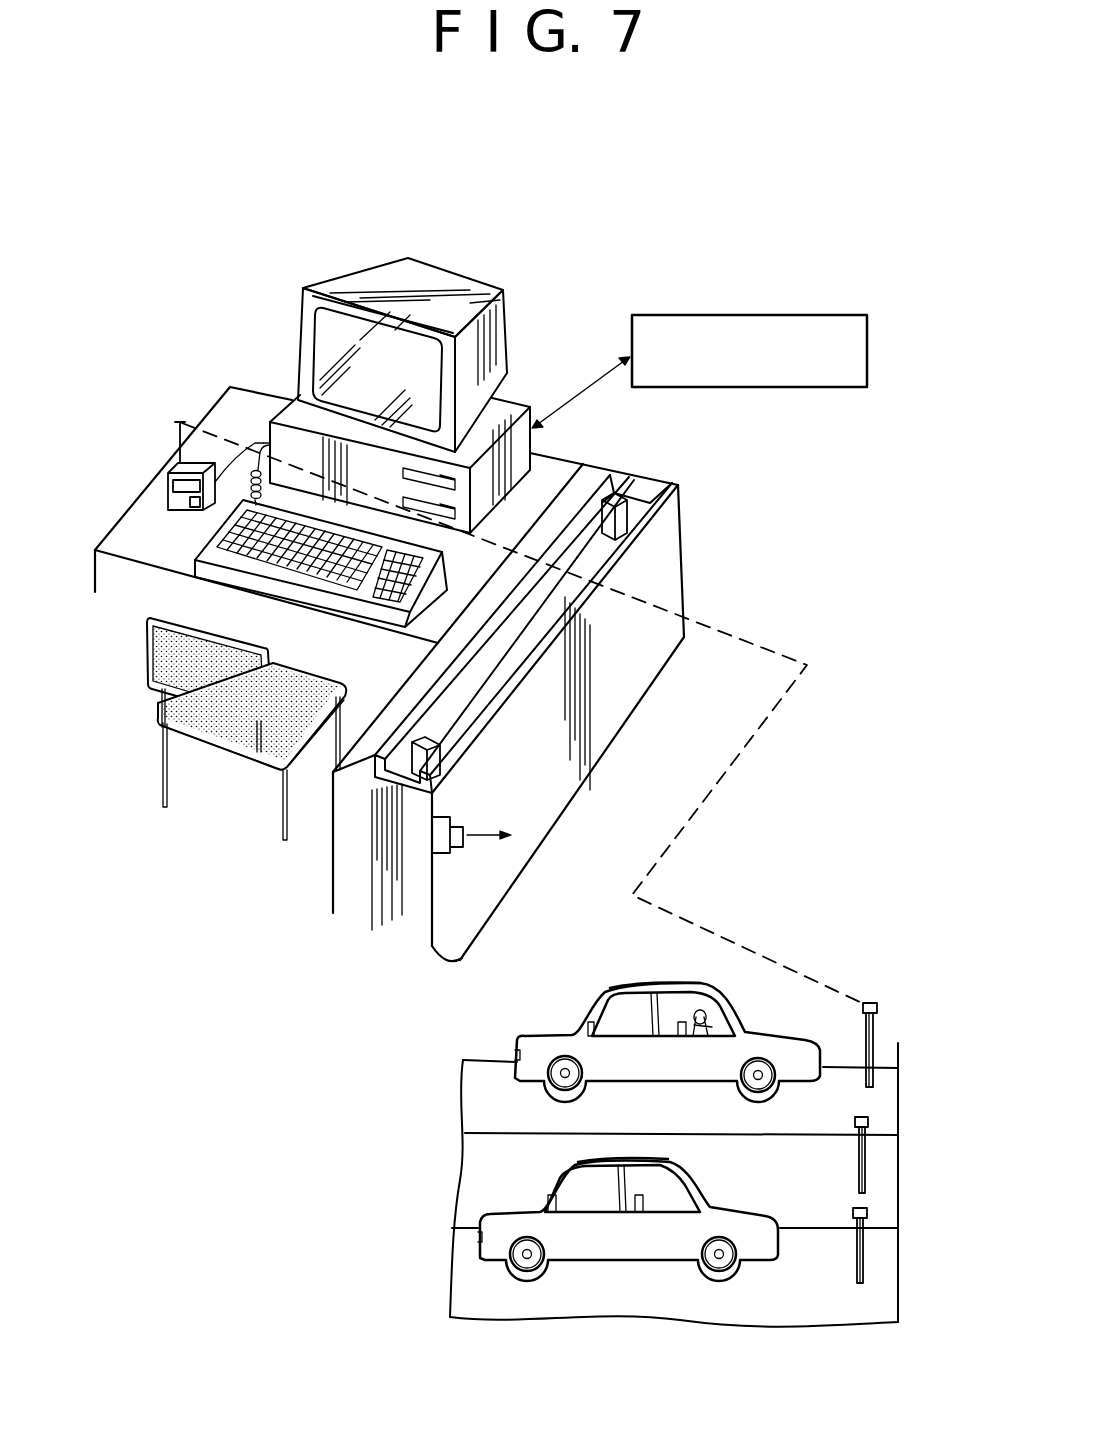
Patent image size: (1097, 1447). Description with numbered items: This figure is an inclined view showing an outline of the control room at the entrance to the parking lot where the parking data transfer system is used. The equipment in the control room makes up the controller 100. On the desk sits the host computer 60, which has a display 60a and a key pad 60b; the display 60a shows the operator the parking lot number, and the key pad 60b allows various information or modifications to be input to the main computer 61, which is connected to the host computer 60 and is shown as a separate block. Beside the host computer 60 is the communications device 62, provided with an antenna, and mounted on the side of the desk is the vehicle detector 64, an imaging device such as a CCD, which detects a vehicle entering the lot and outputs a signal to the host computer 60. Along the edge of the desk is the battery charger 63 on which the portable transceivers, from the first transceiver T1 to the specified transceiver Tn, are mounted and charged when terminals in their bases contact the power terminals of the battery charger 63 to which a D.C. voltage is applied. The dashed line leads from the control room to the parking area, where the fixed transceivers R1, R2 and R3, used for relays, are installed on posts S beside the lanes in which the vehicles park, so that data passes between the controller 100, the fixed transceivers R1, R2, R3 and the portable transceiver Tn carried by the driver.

The controller 100 is at (572, 228).
The host computer 60 is at (362, 416).
The display 60a is at (320, 333).
The key pad 60b is at (312, 573).
The main computer 61 is at (786, 315).
The communications device 62 is at (168, 470).
The battery charger 63 is at (620, 473).
The vehicle detector 64 is at (465, 828).
The portable transceiver T1 is at (440, 759).
The portable transceiver Tn is at (627, 522).
The fixed transceiver R1 is at (871, 1003).
The fixed transceiver R2 is at (868, 1123).
The fixed transceiver R3 is at (867, 1213).
The support post S is at (873, 1042).